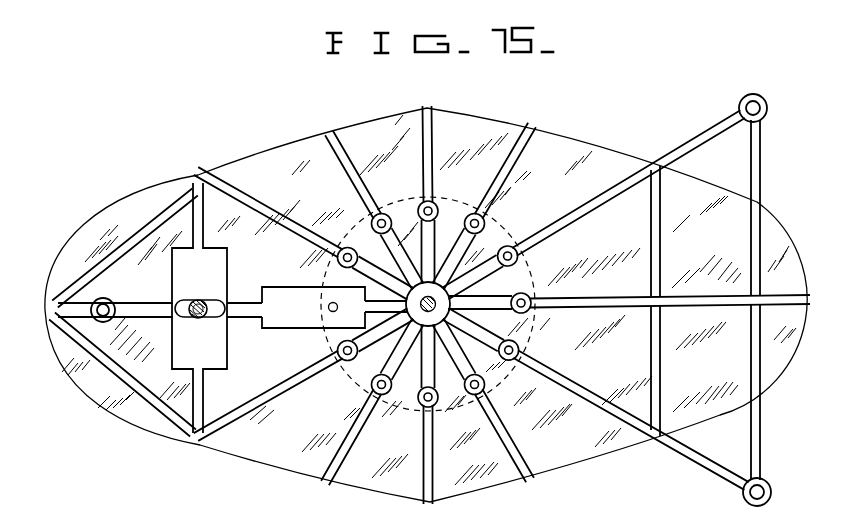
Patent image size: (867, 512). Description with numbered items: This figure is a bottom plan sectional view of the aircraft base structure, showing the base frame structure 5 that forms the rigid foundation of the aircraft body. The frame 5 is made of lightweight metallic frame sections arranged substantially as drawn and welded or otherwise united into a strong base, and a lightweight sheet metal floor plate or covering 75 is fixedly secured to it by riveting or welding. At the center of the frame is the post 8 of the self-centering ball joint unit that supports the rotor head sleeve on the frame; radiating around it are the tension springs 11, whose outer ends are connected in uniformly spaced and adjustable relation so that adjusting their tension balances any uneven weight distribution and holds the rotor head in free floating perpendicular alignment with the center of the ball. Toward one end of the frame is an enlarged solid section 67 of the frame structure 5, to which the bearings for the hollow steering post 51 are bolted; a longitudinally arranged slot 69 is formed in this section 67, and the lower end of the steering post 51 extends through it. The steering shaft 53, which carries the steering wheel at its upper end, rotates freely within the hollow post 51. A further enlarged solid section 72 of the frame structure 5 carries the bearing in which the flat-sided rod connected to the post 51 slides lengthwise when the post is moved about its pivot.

The base frame structure 5 is at (115, 370).
The post 8 is at (423, 309).
The tension springs 11 is at (383, 212).
The hollow steering post 51 is at (223, 300).
The shaft 53 is at (195, 318).
The enlarged solid section 67 is at (217, 353).
The longitudinally arranged slot 69 is at (197, 300).
The enlarged solid section 72 is at (297, 301).
The floor plate covering 75 is at (252, 450).